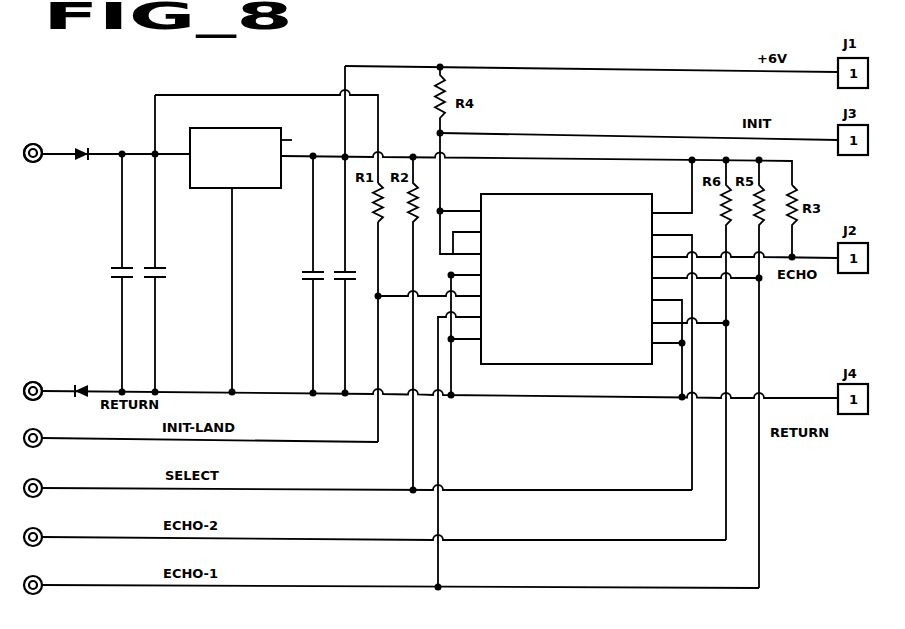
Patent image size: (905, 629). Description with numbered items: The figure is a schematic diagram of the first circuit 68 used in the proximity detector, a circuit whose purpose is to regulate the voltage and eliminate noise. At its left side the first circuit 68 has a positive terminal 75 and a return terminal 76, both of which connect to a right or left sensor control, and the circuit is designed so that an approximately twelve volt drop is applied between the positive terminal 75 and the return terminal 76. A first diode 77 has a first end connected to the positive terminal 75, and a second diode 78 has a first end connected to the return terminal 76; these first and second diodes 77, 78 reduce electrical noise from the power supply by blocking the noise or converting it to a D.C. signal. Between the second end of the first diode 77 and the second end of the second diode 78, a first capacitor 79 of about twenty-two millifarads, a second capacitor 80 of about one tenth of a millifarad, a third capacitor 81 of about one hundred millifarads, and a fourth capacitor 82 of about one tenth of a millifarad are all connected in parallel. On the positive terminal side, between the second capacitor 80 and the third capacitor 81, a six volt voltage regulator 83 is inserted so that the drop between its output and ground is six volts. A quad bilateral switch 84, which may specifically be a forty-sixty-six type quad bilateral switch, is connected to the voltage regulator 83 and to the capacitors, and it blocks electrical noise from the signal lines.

The first circuit 68 is at (603, 61).
The positive terminal 75 is at (34, 143).
The return terminal 76 is at (33, 380).
The first diode 77 is at (84, 146).
The second diode 78 is at (78, 384).
The first capacitor 79 is at (114, 268).
The second capacitor 80 is at (159, 279).
The third capacitor 81 is at (308, 271).
The fourth capacitor 82 is at (347, 282).
The voltage regulator 83 is at (292, 140).
The quad bilateral switch 84 is at (522, 364).